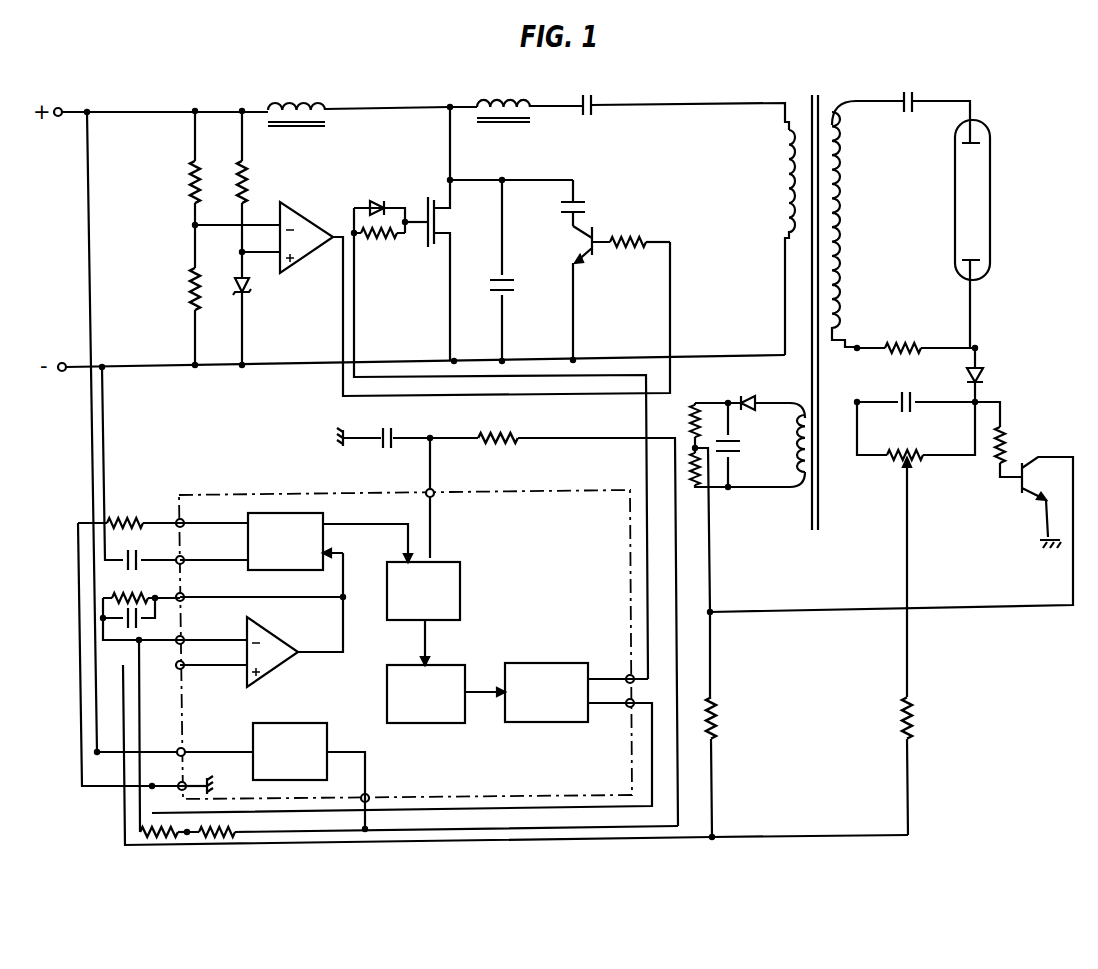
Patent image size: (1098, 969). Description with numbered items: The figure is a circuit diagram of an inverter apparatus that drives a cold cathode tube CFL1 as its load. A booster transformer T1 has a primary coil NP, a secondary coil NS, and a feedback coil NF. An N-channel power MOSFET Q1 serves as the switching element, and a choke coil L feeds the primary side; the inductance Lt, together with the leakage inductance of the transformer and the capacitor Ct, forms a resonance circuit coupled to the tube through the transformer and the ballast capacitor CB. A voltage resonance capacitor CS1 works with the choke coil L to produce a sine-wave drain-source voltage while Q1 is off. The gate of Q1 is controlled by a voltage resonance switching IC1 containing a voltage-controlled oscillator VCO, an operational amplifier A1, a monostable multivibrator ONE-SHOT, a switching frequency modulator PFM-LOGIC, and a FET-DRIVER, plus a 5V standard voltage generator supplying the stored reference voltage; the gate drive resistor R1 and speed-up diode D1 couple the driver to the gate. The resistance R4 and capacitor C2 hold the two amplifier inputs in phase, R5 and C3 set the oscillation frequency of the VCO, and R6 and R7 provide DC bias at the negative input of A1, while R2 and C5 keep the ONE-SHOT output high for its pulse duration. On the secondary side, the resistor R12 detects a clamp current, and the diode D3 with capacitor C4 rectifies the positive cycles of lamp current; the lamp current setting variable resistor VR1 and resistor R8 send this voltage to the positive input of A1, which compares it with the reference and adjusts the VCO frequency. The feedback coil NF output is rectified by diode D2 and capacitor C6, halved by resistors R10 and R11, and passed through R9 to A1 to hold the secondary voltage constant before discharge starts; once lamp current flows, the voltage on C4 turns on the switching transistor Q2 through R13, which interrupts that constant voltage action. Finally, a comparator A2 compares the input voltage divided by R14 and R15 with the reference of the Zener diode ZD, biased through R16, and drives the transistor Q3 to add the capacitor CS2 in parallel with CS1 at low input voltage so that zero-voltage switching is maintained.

The choke coil L is at (296, 98).
The inductance Lt is at (503, 95).
The capacitor Ct is at (587, 92).
The booster transformer T1 is at (812, 299).
The primary coil NP is at (774, 242).
The secondary coil NS is at (868, 224).
The ballast capacitor CB is at (932, 92).
The cold cathode tube CFL1 is at (999, 234).
The resistor R14 is at (175, 168).
The resistor R15 is at (175, 295).
The resistor R16 is at (453, 193).
The Zener diode ZD is at (257, 308).
The comparator A2 is at (306, 237).
The speed-up diode D1 is at (379, 202).
The gate drive resistor R1 is at (379, 238).
The N-channel power MOSFET Q1 is at (433, 234).
The voltage resonance capacitor CS1 is at (516, 270).
The resonance capacitor CS2 is at (593, 203).
The transistor Q3 is at (591, 293).
The resistor R12 is at (916, 333).
The diode D3 is at (992, 375).
The capacitor C4 is at (916, 388).
The lamp current setting variable resistor VR1 is at (916, 447).
The resistor R13 is at (992, 442).
The switching transistor Q2 is at (891, 524).
The resistor R8 is at (924, 661).
The resistor R9 is at (729, 724).
The resistor R10 is at (689, 425).
The resistor R11 is at (691, 465).
The diode D2 is at (766, 393).
The capacitor C6 is at (738, 445).
The feedback coil NF is at (766, 451).
The capacitor C5 is at (383, 425).
The resistor R2 is at (554, 613).
The voltage resonance switching IC IC1 is at (405, 644).
The voltage-controlled oscillator VCO is at (296, 541).
The monostable multivibrator ONE-SHOT is at (423, 613).
The switching frequency modulator circuit PFM-LOGIC is at (446, 694).
The FET driver FET-DRIVER is at (402, 738).
The operational amplifier A1 is at (261, 620).
The 5V standard voltage generator 5V is at (300, 781).
The resistor R5 is at (130, 641).
The capacitor C3 is at (156, 543).
The resistance R4 is at (141, 604).
The capacitor C2 is at (137, 715).
The resistor R7 is at (163, 850).
The resistor R6 is at (432, 849).